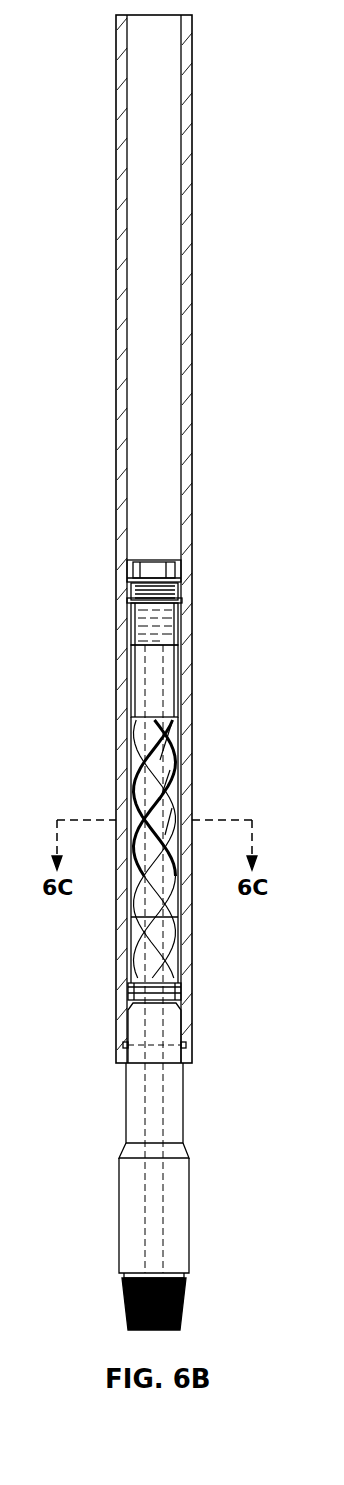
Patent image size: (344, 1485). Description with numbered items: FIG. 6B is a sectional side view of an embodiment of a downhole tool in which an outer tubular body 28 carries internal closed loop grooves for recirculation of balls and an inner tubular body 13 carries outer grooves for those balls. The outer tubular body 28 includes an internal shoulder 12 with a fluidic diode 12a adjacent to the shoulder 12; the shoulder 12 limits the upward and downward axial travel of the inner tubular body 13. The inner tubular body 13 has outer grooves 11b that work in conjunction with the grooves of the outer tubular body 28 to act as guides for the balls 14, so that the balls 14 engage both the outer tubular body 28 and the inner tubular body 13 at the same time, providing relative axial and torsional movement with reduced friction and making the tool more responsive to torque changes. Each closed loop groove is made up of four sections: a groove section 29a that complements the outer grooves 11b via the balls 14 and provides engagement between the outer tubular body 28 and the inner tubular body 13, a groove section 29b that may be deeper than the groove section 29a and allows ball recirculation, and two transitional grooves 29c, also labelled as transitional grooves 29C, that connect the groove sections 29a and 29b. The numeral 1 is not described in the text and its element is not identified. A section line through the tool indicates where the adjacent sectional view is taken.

The outer tubular body 28 is at (186, 136).
The sensor assembly 1 is at (183, 576).
The internal shoulder 12 is at (180, 596).
The fluidic diode 12a is at (182, 632).
The outer grooves 11b is at (178, 726).
The balls 14 is at (126, 800).
The transitional grooves 29C is at (133, 790).
The transitional grooves 29c is at (183, 762).
The groove section 29b is at (180, 792).
The groove section 29a is at (183, 824).
The inner tubular body 13 is at (184, 1186).